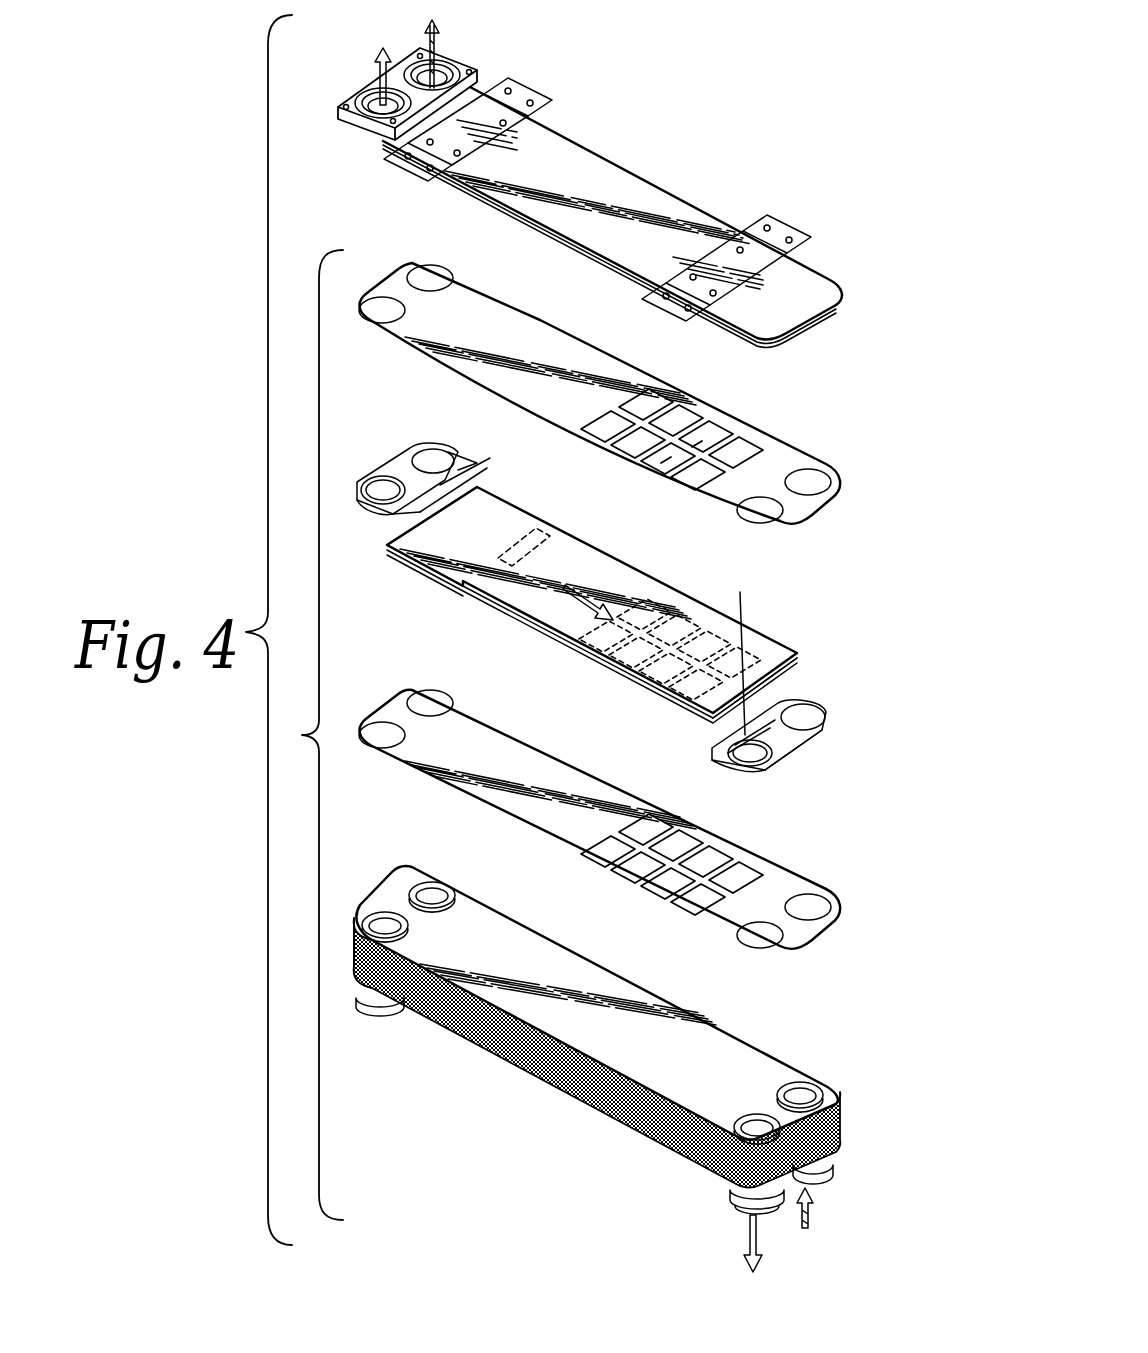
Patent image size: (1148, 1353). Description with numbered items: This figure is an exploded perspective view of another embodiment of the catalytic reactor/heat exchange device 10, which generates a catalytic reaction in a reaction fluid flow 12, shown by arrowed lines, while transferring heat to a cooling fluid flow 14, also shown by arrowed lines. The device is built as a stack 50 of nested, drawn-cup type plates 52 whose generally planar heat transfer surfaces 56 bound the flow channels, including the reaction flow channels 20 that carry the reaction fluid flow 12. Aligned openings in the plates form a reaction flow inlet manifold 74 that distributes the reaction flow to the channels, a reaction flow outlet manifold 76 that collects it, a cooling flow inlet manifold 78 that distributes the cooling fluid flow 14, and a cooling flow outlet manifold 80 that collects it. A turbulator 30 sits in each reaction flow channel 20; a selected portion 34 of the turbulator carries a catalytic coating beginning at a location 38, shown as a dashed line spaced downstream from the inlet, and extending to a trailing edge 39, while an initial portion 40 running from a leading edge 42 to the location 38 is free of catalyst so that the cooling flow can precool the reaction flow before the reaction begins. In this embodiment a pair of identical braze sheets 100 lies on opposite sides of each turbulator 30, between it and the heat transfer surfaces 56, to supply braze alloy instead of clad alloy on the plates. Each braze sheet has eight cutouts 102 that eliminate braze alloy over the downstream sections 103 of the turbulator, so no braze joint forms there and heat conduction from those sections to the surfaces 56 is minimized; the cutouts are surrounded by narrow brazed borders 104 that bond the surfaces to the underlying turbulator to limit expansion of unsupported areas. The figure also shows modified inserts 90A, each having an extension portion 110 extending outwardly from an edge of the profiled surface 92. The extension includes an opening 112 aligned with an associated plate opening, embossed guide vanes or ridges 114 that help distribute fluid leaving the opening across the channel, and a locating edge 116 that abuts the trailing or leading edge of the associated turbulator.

The catalytic reactor/heat exchange device 10 is at (688, 102).
The reaction fluid flow 12 is at (428, 34).
The cooling fluid flow 14 is at (372, 64).
The reaction flow channels 20 is at (668, 1082).
The turbulator 30 is at (567, 548).
The selected portion of the turbulator 34 is at (582, 648).
The location 38 is at (535, 527).
The trailing edge 39 is at (785, 678).
The initial portion of the turbulator 40 is at (430, 572).
The leading edge 42 is at (390, 535).
The stack 50 is at (305, 735).
The plates 52 is at (357, 935).
The heat transfer surfaces 56 is at (803, 325).
The reaction flow inlet manifold 74 is at (415, 886).
The reaction flow outlet manifold 76 is at (836, 1108).
The cooling flow inlet manifold 78 is at (801, 1086).
The cooling flow outlet manifold 80 is at (383, 918).
The inserts 90A is at (385, 468).
The profiled surface 92 is at (422, 507).
The braze sheets 100 is at (388, 280).
The cutouts 102 is at (690, 412).
The downstream sections of the turbulator 103 is at (650, 668).
The brazed borders 104 is at (707, 462).
The extension portion 110 is at (418, 446).
The opening 112 is at (436, 448).
The embossed guide vanes or ridges 114 is at (470, 473).
The locating edge 116 is at (397, 515).